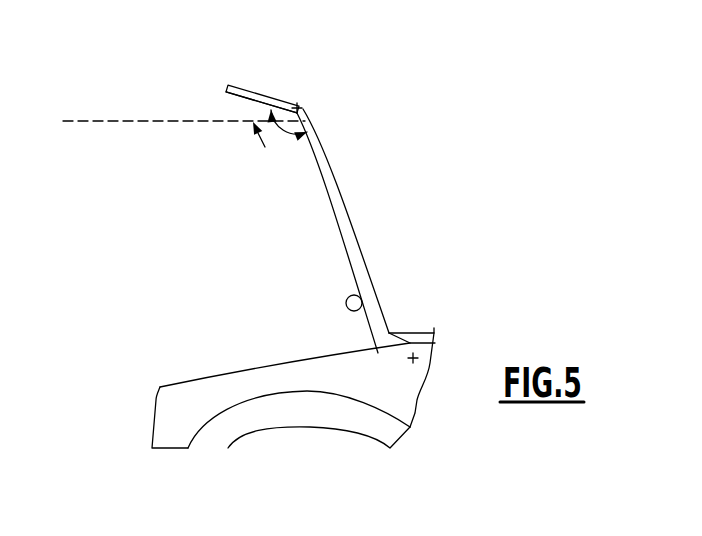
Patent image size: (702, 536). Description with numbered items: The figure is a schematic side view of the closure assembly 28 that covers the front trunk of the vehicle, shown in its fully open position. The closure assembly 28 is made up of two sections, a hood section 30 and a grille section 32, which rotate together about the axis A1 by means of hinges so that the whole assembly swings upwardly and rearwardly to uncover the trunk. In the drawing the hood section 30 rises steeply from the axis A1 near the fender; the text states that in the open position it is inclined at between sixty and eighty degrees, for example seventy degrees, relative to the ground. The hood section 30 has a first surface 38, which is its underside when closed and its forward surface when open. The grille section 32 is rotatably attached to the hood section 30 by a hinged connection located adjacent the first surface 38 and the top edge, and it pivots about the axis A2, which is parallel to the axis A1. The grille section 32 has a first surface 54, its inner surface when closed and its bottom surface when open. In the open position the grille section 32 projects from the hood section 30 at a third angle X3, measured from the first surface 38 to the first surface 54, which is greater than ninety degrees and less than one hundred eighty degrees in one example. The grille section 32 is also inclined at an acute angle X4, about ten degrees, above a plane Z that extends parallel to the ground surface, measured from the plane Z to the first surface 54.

The closure assembly 28 is at (424, 165).
The hood section 30 is at (351, 173).
The grille section 32 is at (254, 89).
The first surface 54 is at (238, 96).
The first surface 38 is at (361, 301).
The axis A1 is at (412, 361).
The axis A2 is at (298, 108).
The plane Z is at (110, 121).
The third angle X3 is at (292, 135).
The acute angle X4 is at (265, 147).